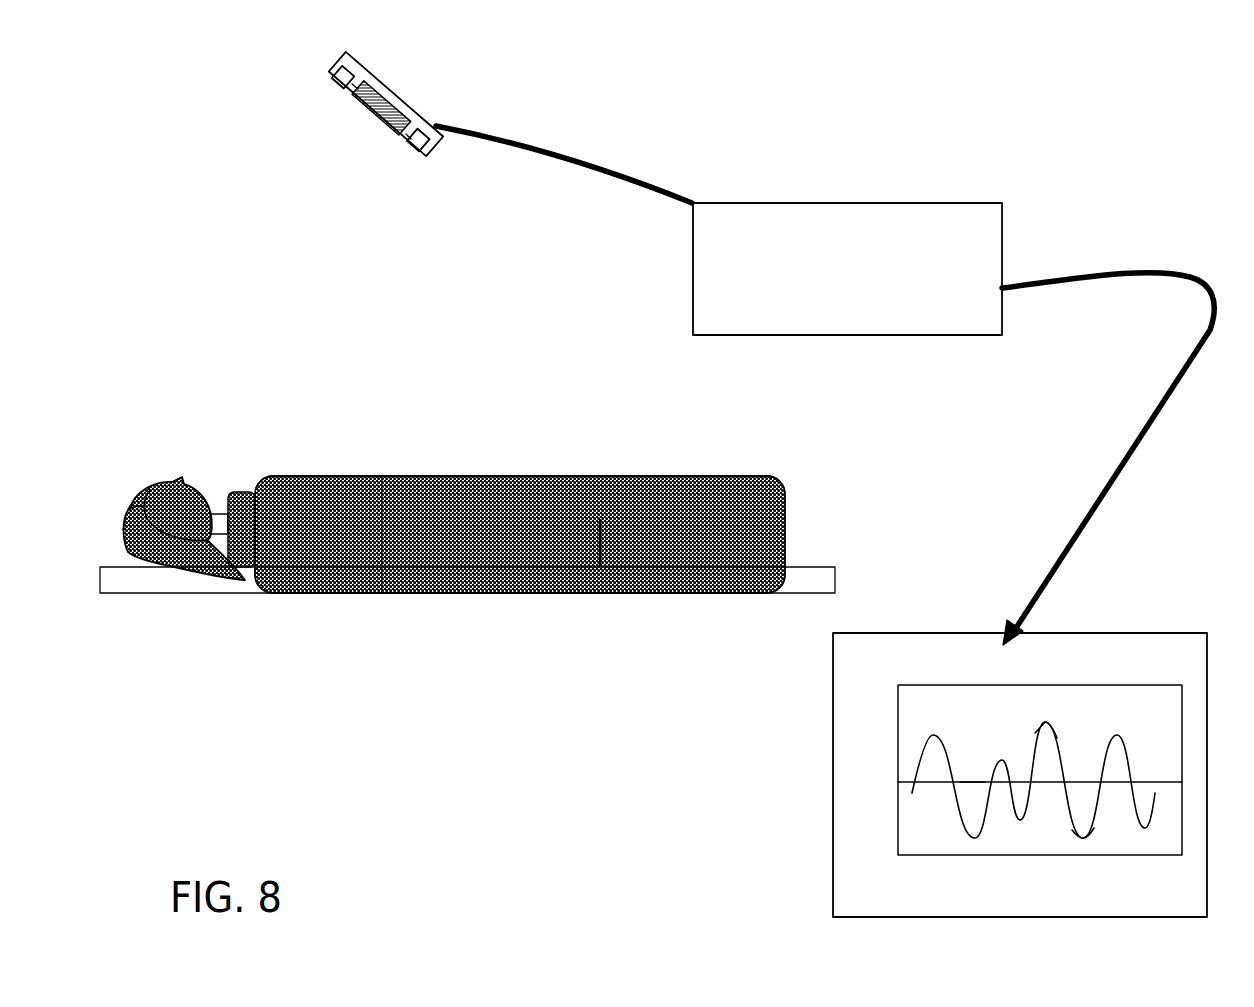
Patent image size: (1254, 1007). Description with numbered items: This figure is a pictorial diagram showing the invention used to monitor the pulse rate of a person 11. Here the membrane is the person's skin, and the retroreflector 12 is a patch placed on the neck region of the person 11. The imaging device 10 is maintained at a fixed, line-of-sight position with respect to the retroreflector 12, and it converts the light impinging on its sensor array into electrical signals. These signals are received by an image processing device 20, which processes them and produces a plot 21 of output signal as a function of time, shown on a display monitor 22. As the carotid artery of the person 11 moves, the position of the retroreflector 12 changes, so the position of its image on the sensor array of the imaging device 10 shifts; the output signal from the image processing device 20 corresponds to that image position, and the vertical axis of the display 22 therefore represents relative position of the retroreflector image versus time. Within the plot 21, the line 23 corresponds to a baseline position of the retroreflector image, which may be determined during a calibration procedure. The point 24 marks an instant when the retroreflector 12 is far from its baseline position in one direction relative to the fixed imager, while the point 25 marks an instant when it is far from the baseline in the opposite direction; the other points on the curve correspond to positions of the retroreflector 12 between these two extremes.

The imaging device 10 is at (432, 101).
The person 11 is at (454, 440).
The retroreflector 12 is at (216, 498).
The image processing device 20 is at (940, 203).
The plot 21 is at (1100, 714).
The display monitor 22 is at (1143, 633).
The line 23 is at (968, 780).
The point 24 is at (1036, 733).
The point 25 is at (1083, 840).